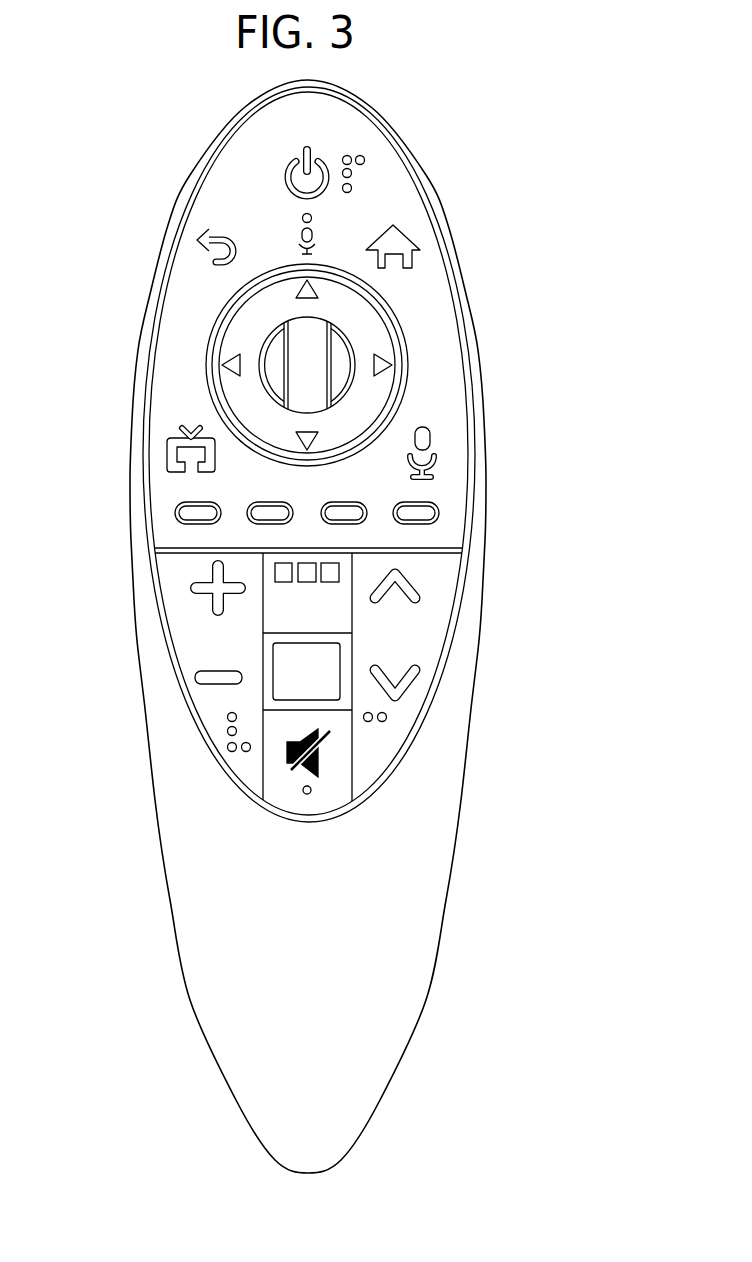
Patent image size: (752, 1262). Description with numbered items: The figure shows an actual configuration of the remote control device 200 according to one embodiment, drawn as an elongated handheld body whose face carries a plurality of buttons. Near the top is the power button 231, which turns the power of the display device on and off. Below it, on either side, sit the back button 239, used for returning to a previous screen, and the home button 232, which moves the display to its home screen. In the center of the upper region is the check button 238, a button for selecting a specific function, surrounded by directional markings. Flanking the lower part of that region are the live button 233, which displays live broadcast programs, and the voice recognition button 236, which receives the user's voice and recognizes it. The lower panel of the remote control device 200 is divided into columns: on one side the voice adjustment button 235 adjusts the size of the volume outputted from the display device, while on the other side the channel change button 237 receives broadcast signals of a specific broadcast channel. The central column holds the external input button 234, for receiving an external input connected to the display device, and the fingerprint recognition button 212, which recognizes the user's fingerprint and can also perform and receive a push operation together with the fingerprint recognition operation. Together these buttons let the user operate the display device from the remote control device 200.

The remote control device 200 is at (78, 115).
The fingerprint recognition button 212 is at (320, 700).
The power button 231 is at (323, 163).
The home button 232 is at (412, 236).
The live button 233 is at (172, 456).
The external input button 234 is at (317, 560).
The voice adjustment button 235 is at (170, 650).
The voice recognition button 236 is at (432, 447).
The channel change button 237 is at (433, 625).
The check button 238 is at (272, 345).
The back button 239 is at (193, 247).